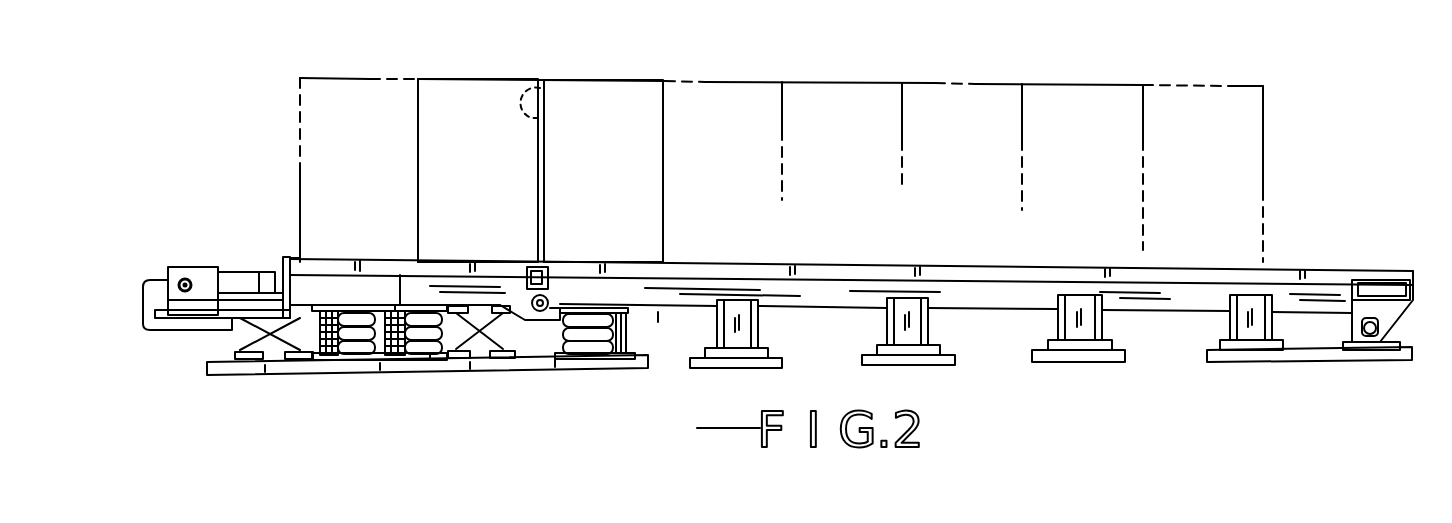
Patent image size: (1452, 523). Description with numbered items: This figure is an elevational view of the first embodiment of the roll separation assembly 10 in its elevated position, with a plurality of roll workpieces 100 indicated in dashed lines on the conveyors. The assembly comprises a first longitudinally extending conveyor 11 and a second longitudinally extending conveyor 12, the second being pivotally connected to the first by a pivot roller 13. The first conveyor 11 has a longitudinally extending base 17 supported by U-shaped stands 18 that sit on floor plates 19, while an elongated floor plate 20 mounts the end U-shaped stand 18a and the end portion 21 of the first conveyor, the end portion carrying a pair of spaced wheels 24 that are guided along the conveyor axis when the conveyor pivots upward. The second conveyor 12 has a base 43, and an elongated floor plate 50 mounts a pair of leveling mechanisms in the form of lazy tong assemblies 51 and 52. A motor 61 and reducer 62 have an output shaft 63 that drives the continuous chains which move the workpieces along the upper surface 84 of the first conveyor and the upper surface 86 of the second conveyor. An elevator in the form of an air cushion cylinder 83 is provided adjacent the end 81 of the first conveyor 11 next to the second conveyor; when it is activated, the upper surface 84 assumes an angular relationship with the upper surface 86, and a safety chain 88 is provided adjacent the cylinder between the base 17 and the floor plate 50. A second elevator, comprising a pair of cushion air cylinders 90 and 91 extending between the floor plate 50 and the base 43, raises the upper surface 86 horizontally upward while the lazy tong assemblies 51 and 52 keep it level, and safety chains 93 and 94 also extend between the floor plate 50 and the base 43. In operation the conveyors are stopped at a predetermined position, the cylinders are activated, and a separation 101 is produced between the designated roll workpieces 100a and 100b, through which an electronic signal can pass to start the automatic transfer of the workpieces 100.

The roll separation assembly 10 is at (1290, 250).
The first longitudinally extending conveyor 11 is at (940, 262).
The second longitudinally extending conveyor 12 is at (438, 261).
The pivot roller 13 is at (547, 354).
The longitudinally extending base 17 is at (658, 314).
The U-shaped stands 18 is at (768, 324).
The end U-shaped stand 18a is at (1225, 342).
The floor plates 19 is at (752, 369).
The elongated floor plate 20 is at (1288, 363).
The end portion 21 is at (1412, 270).
The spaced wheels 24 is at (1372, 352).
The base 43 is at (342, 294).
The elongated floor plate 50 is at (338, 372).
The lazy tong assembly 51 is at (240, 348).
The lazy tong assembly 52 is at (480, 352).
The motor 61 is at (242, 266).
The reducer 62 is at (178, 266).
The output shaft 63 is at (180, 288).
The end 81 is at (605, 262).
The air cushion cylinder 83 is at (582, 360).
The upper surface 84 is at (703, 261).
The upper surface 86 is at (322, 261).
The safety chain 88 is at (628, 326).
The cushion air cylinder 90 is at (378, 372).
The cushion air cylinder 91 is at (430, 368).
The safety chain 93 is at (330, 372).
The safety chain 94 is at (397, 306).
The roll workpieces 100 is at (366, 78).
The roll workpiece 100a is at (463, 78).
The roll workpiece 100b is at (612, 80).
The separation 101 is at (545, 119).